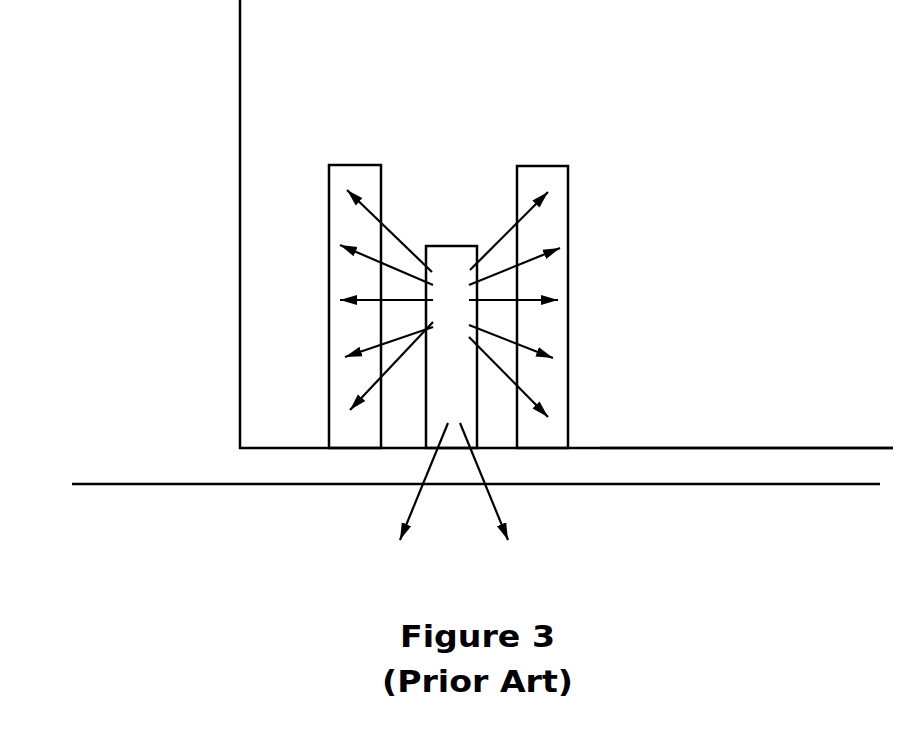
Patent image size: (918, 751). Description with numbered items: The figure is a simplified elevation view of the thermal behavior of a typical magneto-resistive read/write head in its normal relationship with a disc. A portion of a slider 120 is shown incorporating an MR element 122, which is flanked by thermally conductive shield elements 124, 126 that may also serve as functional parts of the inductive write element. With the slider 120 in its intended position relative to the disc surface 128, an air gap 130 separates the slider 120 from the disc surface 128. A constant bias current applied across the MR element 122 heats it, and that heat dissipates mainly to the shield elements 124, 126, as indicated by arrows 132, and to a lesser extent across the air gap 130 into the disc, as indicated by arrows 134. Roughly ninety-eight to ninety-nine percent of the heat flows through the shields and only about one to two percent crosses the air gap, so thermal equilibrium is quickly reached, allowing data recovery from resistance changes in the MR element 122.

The slider 120 is at (240, 283).
The MR element 122 is at (443, 246).
The shield element 124 is at (363, 165).
The shield element 126 is at (543, 166).
The disc surface 128 is at (167, 483).
The air gap 130 is at (670, 448).
The arrows 132 is at (523, 217).
The arrows 134 is at (497, 507).